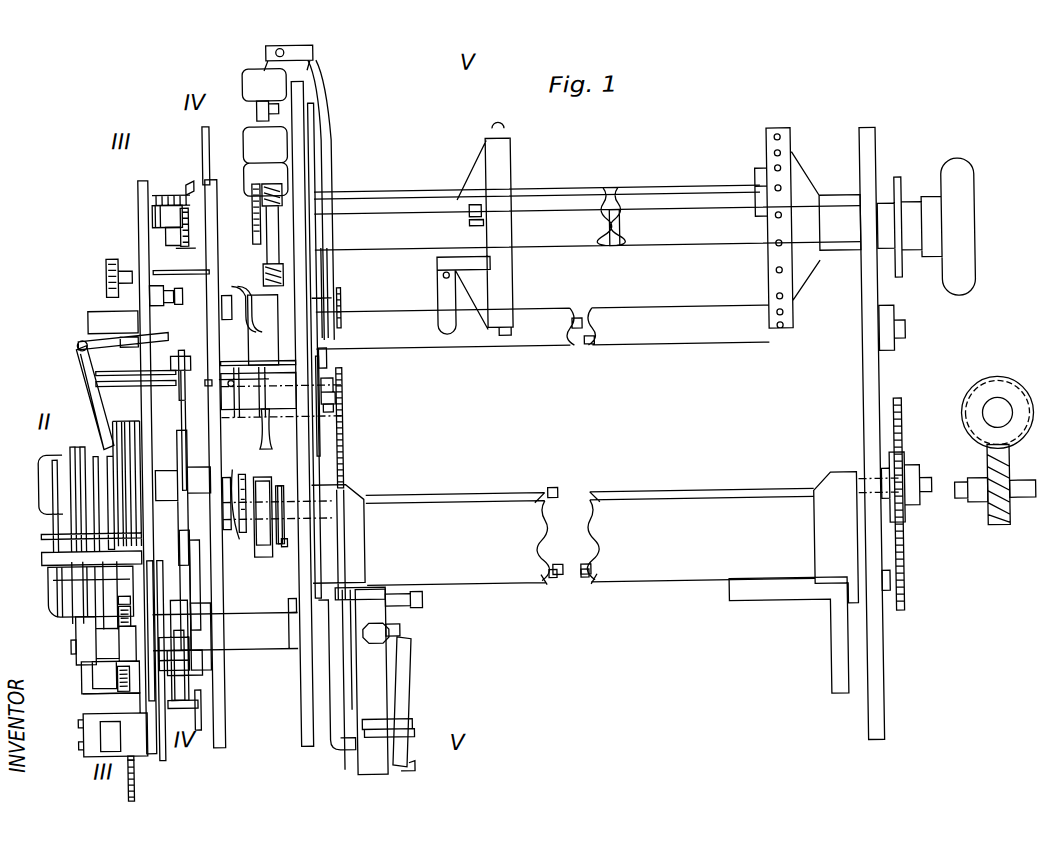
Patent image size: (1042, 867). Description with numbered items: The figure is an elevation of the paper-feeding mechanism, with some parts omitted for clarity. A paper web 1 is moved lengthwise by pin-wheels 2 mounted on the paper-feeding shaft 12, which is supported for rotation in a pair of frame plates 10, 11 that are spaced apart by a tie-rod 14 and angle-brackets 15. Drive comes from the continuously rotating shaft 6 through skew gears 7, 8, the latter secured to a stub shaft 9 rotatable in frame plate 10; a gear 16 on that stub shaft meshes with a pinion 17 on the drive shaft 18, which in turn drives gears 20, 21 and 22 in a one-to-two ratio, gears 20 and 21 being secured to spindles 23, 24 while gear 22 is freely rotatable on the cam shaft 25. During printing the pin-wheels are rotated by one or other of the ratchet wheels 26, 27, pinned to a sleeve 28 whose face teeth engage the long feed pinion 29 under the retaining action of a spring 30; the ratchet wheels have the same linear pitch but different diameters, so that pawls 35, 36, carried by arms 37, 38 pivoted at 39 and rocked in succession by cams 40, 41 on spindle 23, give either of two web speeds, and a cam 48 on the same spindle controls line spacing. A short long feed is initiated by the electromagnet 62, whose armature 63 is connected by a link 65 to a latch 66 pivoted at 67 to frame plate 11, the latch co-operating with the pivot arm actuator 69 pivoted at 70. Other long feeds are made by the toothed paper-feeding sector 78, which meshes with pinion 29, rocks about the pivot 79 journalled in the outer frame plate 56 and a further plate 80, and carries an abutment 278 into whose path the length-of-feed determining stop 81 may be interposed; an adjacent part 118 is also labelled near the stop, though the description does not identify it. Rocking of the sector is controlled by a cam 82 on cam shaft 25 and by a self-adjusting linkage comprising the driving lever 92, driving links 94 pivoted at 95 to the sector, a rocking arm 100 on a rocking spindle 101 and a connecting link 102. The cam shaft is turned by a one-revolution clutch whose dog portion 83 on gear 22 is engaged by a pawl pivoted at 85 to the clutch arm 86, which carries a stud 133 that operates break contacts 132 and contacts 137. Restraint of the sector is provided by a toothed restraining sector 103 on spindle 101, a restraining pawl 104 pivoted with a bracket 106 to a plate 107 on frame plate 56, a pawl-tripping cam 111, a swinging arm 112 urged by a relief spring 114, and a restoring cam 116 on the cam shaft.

The web 1 is at (618, 282).
The pin-wheels 2 is at (513, 155).
The continuously rotating shaft 6 is at (990, 410).
The skew gear 7 is at (998, 404).
The skew gear 8 is at (1009, 482).
The stub shaft 9 is at (1024, 512).
The frame plate 10 is at (878, 676).
The frame plate 11 is at (297, 737).
The paper-feeding shaft 12 is at (622, 262).
The tie-rod 14 is at (606, 354).
The angle-brackets 15 is at (594, 594).
The gear 16 is at (903, 411).
The pinion 17 is at (904, 461).
The drive shaft 18 is at (632, 496).
The gear 20 is at (338, 382).
The gear 21 is at (345, 465).
The gear 22 is at (329, 716).
The spindle 23 is at (330, 410).
The spindle 24 is at (296, 575).
The cam shaft 25 is at (287, 642).
The ratchet wheel 26 is at (282, 187).
The ratchet wheel 27 is at (252, 218).
The sleeve 28 is at (188, 242).
The long feed pinion 29 is at (152, 225).
The spring 30 is at (152, 206).
The pawl 35 is at (250, 344).
The pawl 36 is at (258, 300).
The arm 37 is at (266, 422).
The arm 38 is at (234, 488).
The pivot 39 is at (78, 359).
The cam 40 is at (282, 538).
The cam 41 is at (234, 428).
The cam 48 is at (258, 486).
The outer frame plate 56 is at (142, 181).
The electromagnet 62 is at (248, 134).
The armature 63 is at (280, 112).
The link 65 is at (320, 137).
The latch 66 is at (340, 302).
The pivot 67 is at (327, 274).
The pivot arm actuator 69 is at (320, 435).
The pivot 70 is at (330, 356).
The toothed paper-feeding sector 78 is at (150, 303).
The pivot 79 is at (238, 540).
The plate 80 is at (214, 707).
The length-of-feed determining stop 81 is at (78, 338).
The cam 82 is at (201, 619).
The dog portion 83 is at (358, 600).
The pivot 85 is at (422, 601).
The clutch arm 86 is at (385, 600).
The driving lever 92 is at (186, 544).
The driving links 94 is at (95, 378).
The pivot 95 is at (202, 348).
The rocking arm 100 is at (160, 667).
The rocking spindle 101 is at (188, 708).
The connecting link 102 is at (122, 560).
The toothed restraining sector 103 is at (134, 781).
The restraining pawl 104 is at (136, 758).
The bracket 106 is at (90, 684).
The plate 107 is at (100, 732).
The pawl-tripping cam 111 is at (72, 645).
The swinging arm 112 is at (86, 580).
The relief spring 114 is at (118, 605).
The paper-feeding sector restoring cam 116 is at (96, 628).
The bracket 118 is at (88, 316).
The break contacts 132 is at (410, 664).
The stud 133 is at (397, 602).
The contacts 137 is at (409, 637).
The abutment 278 is at (148, 278).